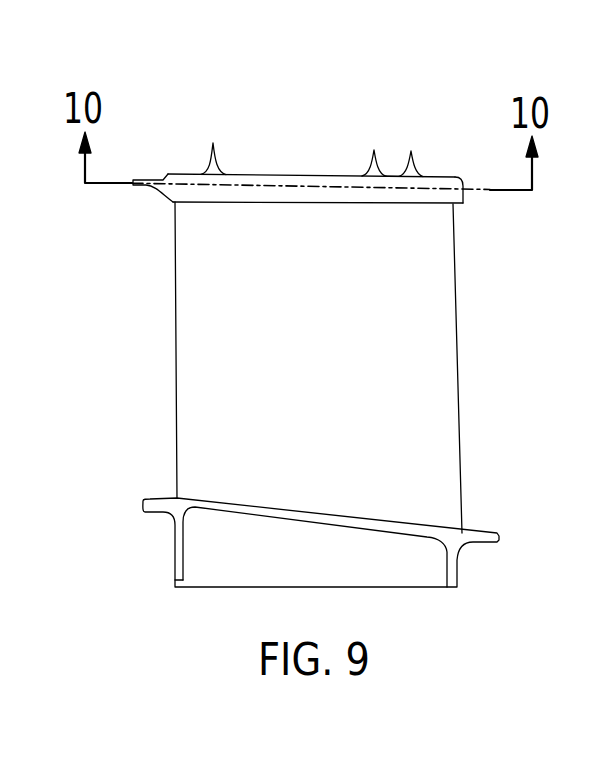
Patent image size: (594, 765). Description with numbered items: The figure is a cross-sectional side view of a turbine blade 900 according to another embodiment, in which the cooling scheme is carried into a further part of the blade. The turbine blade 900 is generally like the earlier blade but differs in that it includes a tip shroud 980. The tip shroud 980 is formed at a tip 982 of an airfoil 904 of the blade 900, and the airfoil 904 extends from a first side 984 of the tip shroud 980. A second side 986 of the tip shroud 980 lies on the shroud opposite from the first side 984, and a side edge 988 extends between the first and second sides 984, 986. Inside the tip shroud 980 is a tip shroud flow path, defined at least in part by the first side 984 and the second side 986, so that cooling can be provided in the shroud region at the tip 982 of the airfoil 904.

The turbine blade 900 is at (427, 110).
The airfoil 904 is at (390, 373).
The tip shroud 980 is at (208, 171).
The tip 982 is at (458, 214).
The first side 984 is at (280, 203).
The second side 986 is at (395, 175).
The side edge 988 is at (164, 195).